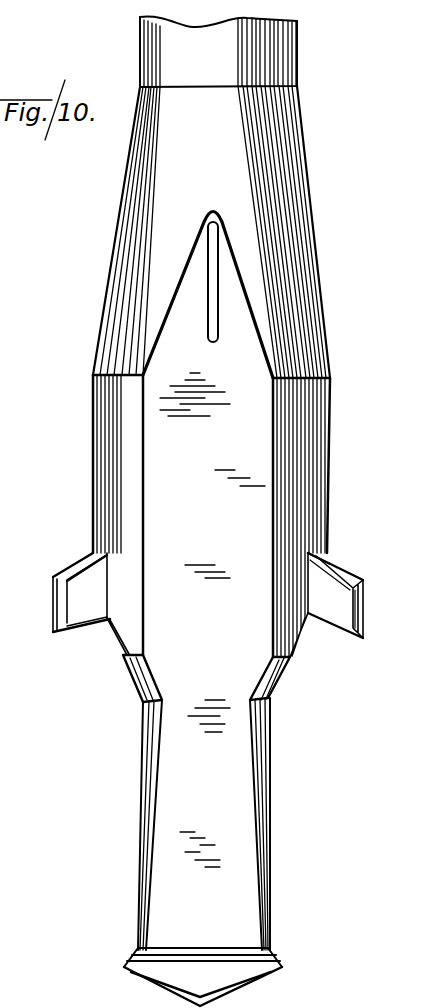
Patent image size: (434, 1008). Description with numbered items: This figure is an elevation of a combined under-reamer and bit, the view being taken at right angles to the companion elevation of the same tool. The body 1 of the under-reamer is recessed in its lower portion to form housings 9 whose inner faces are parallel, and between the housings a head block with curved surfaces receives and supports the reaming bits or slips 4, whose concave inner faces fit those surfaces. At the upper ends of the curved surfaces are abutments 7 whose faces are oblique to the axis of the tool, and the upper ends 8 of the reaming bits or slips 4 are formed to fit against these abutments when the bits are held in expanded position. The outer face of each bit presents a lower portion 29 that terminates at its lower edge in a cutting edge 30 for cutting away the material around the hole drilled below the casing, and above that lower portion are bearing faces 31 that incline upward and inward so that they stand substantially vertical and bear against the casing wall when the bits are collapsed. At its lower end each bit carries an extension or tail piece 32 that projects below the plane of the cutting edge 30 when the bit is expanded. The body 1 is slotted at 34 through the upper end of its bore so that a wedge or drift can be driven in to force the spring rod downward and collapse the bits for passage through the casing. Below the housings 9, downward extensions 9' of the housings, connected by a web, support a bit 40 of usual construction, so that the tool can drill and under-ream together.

The body 1 is at (310, 165).
The slot 34 is at (213, 292).
The reaming bits or slips 4 is at (82, 591).
The bearing faces 31 is at (63, 572).
The cutting edge 30 is at (56, 634).
The extension or tail piece 32 is at (105, 627).
The abutments 7 is at (327, 551).
The upper ends of reaming bits 8 is at (330, 585).
The lower portion of outer face 29 is at (365, 613).
The housings 9 is at (223, 678).
The downward extensions of housings 9' is at (226, 824).
The bit 40 is at (253, 922).